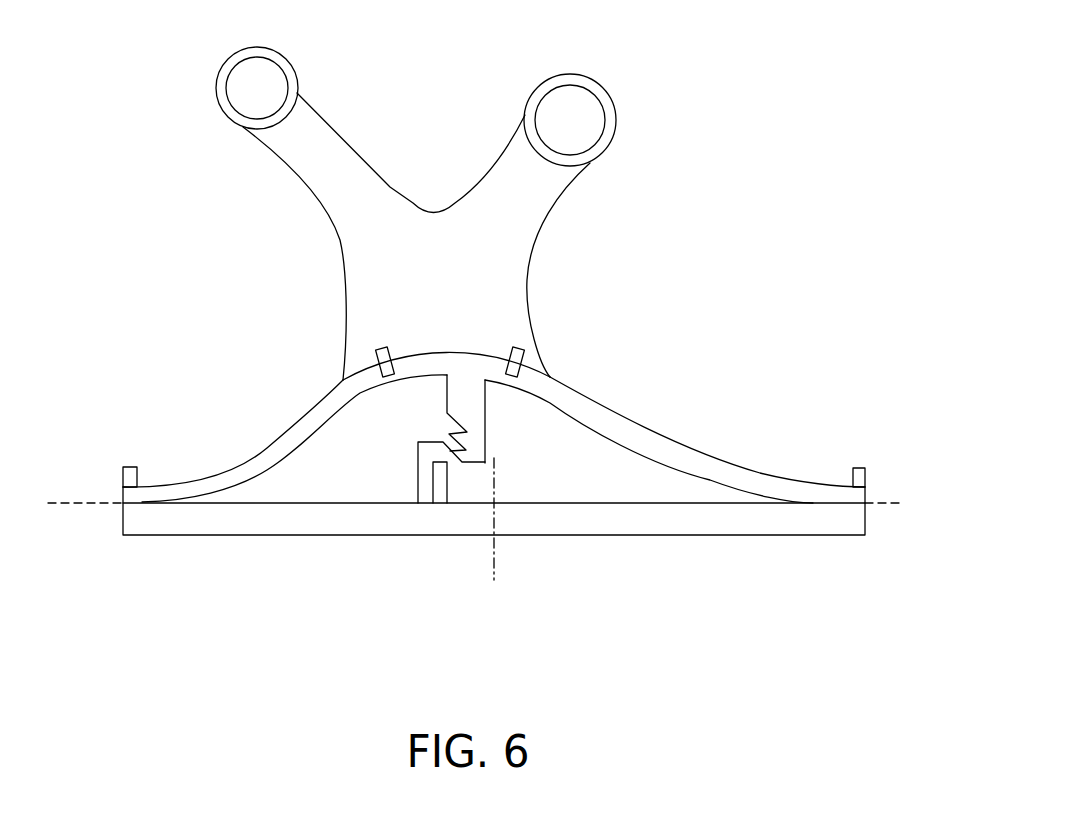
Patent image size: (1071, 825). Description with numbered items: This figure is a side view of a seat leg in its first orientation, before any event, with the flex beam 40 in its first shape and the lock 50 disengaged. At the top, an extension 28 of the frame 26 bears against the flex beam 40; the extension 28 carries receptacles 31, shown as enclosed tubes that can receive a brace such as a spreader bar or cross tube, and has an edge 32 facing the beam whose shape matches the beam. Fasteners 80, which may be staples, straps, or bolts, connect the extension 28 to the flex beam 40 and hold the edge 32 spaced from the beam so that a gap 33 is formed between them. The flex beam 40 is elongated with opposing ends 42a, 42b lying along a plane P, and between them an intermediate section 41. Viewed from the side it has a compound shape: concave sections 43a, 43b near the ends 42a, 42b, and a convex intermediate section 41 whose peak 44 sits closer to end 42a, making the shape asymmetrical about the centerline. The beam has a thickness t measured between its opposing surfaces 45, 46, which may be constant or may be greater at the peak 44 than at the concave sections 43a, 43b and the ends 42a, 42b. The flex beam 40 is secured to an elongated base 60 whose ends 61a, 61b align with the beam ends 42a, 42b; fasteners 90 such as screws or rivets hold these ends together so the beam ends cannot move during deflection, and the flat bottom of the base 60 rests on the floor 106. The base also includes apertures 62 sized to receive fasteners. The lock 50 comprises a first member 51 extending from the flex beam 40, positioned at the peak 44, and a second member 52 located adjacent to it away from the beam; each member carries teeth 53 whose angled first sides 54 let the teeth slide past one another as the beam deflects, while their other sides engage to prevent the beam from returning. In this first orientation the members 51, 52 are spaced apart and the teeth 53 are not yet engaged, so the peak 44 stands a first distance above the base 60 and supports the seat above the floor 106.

The frame 26 is at (497, 252).
The extension 28 is at (360, 190).
The receptacles 31 is at (260, 85).
The edge 32 is at (405, 357).
The gap 33 is at (430, 350).
The flex beam 40 is at (655, 443).
The intermediate section 41 is at (468, 363).
The end 42a is at (120, 495).
The end 42b is at (838, 487).
The concave section 43a is at (210, 485).
The concave section 43b is at (770, 483).
The peak 44 is at (460, 350).
The surface 45 is at (700, 450).
The surface 46 is at (680, 465).
The lock 50 is at (383, 469).
The first member 51 is at (475, 403).
The second member 52 is at (427, 480).
The teeth 53 is at (452, 442).
The first side 54 is at (460, 465).
The base 60 is at (707, 518).
The end 61a is at (123, 517).
The end 61b is at (868, 513).
The apertures 62 is at (783, 535).
The fasteners 80 is at (370, 355).
The fasteners 90 is at (128, 467).
The floor 106 is at (138, 662).
The plane P is at (65, 502).
The thickness t is at (593, 472).